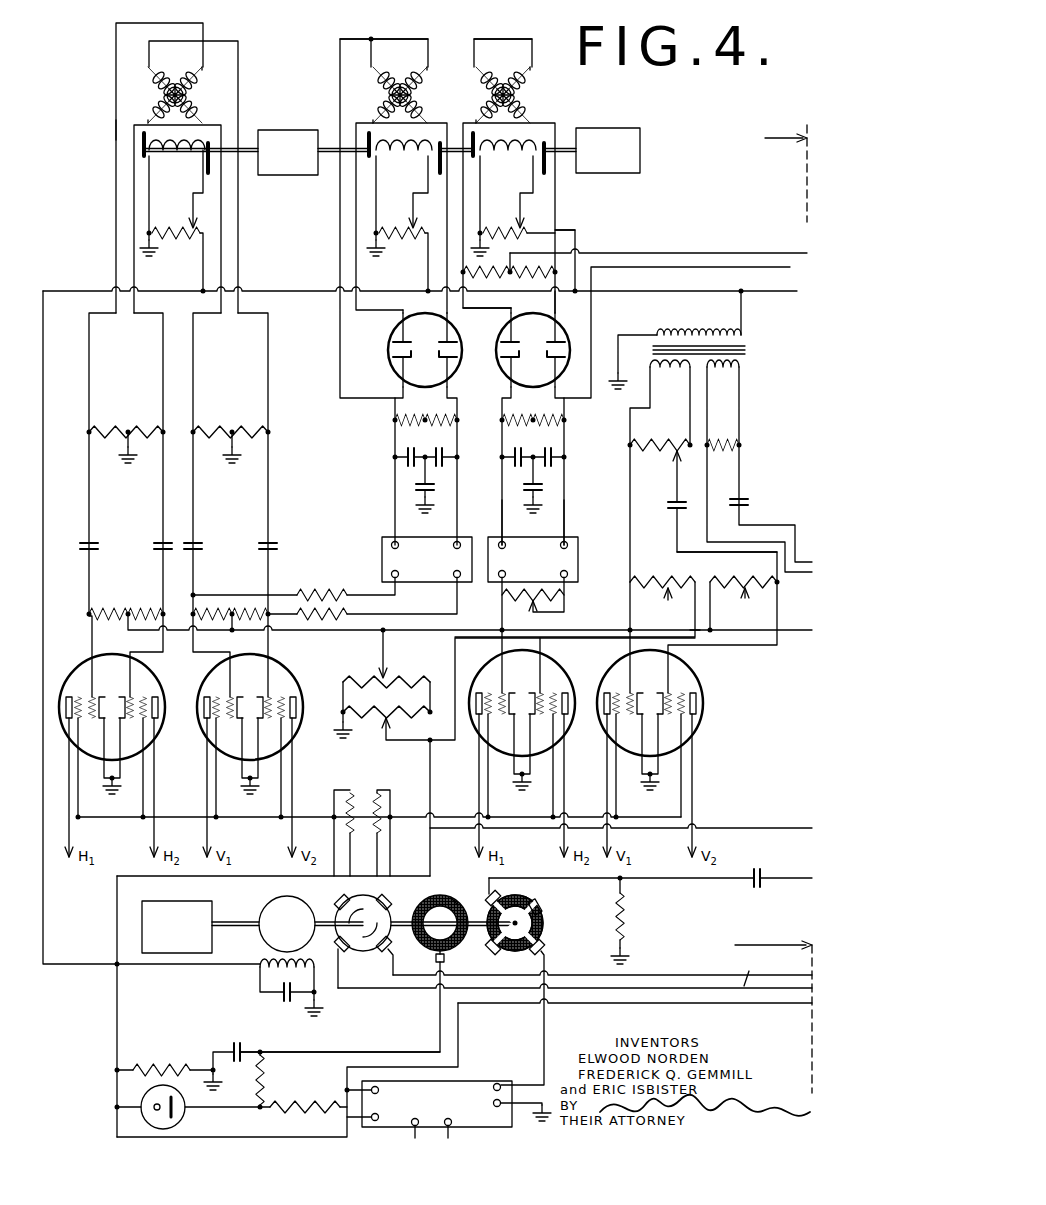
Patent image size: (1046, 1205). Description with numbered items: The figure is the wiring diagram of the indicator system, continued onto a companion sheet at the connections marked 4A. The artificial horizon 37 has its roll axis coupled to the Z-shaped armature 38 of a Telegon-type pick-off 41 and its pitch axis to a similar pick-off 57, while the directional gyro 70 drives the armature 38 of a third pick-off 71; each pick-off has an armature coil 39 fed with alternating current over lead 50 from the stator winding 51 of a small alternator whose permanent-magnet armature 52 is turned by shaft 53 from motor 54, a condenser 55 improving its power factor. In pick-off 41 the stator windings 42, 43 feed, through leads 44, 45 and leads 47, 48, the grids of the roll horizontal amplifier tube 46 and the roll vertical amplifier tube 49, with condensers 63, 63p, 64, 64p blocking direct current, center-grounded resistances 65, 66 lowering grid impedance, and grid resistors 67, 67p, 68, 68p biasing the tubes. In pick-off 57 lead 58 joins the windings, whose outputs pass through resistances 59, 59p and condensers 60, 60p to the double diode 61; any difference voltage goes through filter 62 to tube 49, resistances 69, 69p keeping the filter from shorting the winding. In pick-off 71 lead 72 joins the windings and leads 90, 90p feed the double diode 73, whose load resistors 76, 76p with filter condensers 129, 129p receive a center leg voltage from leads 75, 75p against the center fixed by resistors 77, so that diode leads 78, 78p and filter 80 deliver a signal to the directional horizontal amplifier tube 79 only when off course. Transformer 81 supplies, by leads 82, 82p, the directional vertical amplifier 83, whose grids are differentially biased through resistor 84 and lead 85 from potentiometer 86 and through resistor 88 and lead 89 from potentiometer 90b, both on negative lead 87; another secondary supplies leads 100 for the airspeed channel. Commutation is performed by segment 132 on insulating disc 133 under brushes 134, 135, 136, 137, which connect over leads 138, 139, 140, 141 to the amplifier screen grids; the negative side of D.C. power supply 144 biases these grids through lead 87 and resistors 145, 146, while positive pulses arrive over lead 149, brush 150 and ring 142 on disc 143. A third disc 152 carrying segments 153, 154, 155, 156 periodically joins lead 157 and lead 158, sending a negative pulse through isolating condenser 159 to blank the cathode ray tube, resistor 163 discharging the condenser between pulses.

The electrical pick-off 41 is at (153, 168).
The pick-off 57 is at (373, 218).
The electrical pick-off 71 is at (519, 176).
The stator winding 42 is at (150, 72).
The stator winding 43 is at (198, 78).
The lead 44 is at (116, 125).
The Z-shaped rotor or armature 38 is at (140, 150).
The armature coil 39 is at (180, 162).
The artificial horizon 37 is at (288, 130).
The directional gyro 70 is at (640, 155).
The lead 58 is at (405, 39).
The lead 72 is at (503, 39).
The lead 50 is at (158, 284).
The lead 75 is at (648, 252).
The lead 75p is at (675, 267).
The resistors 77 is at (485, 276).
The lead 90 is at (468, 308).
The lead 90p is at (557, 228).
The potentiometer 90b is at (380, 728).
The double diode rectifier tube 61 is at (388, 349).
The double diode 73 is at (556, 328).
The resistance 59 is at (398, 426).
The resistance 59p is at (452, 426).
The condenser 60 is at (404, 468).
The condenser 60p is at (450, 466).
The diode load resistor 76 is at (530, 416).
The diode load resistor 76p is at (558, 416).
The filter condenser 129 is at (514, 468).
The filter condenser 129p is at (556, 466).
The diode lead 78 is at (502, 510).
The diode lead 78p is at (564, 512).
The filter 62 is at (382, 553).
The filter 80 is at (578, 553).
The resistance 69 is at (330, 592).
The resistance 69p is at (360, 608).
The transformer 81 is at (750, 340).
The lead 82 is at (648, 510).
The lead 82p is at (722, 556).
The leads 100 is at (746, 520).
The resistor 88 is at (680, 596).
The resistor 84 is at (756, 592).
The lead 45 is at (163, 362).
The lead 47 is at (193, 366).
The lead 48 is at (268, 388).
The center-grounded resistance 65 is at (138, 426).
The center-grounded resistance 66 is at (242, 426).
The condenser 63 is at (80, 546).
The condenser 63p is at (154, 546).
The condenser 64 is at (203, 546).
The condenser 64p is at (260, 546).
The grid resistor 67 is at (110, 610).
The grid resistor 67p is at (146, 610).
The grid resistor 68 is at (216, 610).
The grid resistor 68p is at (250, 610).
The lead 85 is at (432, 636).
The lead 89 is at (562, 636).
The potentiometer 86 is at (396, 672).
The roll horizontal amplifier tube 46 is at (64, 682).
The roll vertical amplifier tube 49 is at (294, 674).
The directional horizontal amplifier tube 79 is at (566, 669).
The directional vertical amplifier 83 is at (698, 682).
The negative supply lead 87 is at (742, 828).
The lead 138 is at (322, 806).
The resistor 145 is at (356, 798).
The resistor 146 is at (380, 794).
The lead 139 is at (422, 818).
The motor 54 is at (178, 900).
The shaft 53 is at (252, 930).
The armature 52 is at (270, 912).
The brush 134 is at (340, 904).
The rotating conducting segment 132 is at (388, 900).
The brush 137 is at (348, 958).
The brush 136 is at (394, 950).
The insulating disc 133 is at (360, 990).
The brush 135 is at (424, 905).
The insulating disc 143 is at (460, 898).
The conducting ring 142 is at (446, 954).
The brush 150 is at (444, 966).
The third insulating disc or section 152 is at (544, 923).
The conducting segment 153 is at (512, 895).
The conducting segment 154 is at (545, 908).
The conducting segment 155 is at (545, 950).
The conducting segment 156 is at (498, 952).
The lead 140 is at (652, 975).
The lead 141 is at (678, 988).
The lead 157 is at (544, 1045).
The lead 158 is at (640, 878).
The isolating condenser 159 is at (752, 890).
The resistor 163 is at (626, 920).
The stator winding 51 is at (262, 972).
The condenser 55 is at (276, 997).
The D.C. power supply 144 is at (460, 1081).
The lead 149 is at (394, 1052).
The connection to FIG. 4A is at (773, 609).